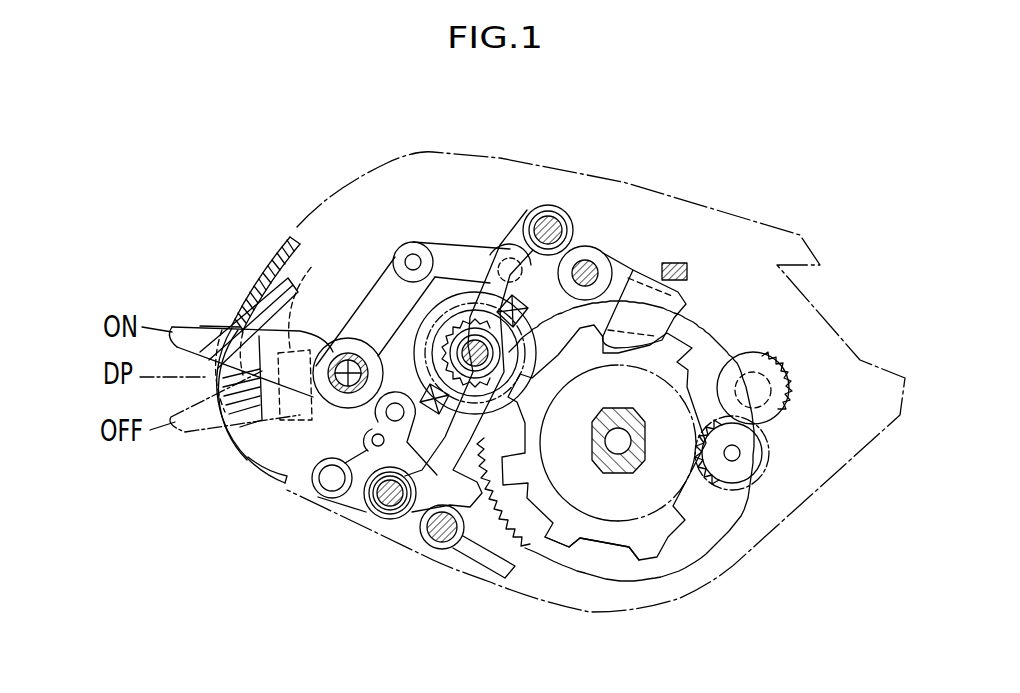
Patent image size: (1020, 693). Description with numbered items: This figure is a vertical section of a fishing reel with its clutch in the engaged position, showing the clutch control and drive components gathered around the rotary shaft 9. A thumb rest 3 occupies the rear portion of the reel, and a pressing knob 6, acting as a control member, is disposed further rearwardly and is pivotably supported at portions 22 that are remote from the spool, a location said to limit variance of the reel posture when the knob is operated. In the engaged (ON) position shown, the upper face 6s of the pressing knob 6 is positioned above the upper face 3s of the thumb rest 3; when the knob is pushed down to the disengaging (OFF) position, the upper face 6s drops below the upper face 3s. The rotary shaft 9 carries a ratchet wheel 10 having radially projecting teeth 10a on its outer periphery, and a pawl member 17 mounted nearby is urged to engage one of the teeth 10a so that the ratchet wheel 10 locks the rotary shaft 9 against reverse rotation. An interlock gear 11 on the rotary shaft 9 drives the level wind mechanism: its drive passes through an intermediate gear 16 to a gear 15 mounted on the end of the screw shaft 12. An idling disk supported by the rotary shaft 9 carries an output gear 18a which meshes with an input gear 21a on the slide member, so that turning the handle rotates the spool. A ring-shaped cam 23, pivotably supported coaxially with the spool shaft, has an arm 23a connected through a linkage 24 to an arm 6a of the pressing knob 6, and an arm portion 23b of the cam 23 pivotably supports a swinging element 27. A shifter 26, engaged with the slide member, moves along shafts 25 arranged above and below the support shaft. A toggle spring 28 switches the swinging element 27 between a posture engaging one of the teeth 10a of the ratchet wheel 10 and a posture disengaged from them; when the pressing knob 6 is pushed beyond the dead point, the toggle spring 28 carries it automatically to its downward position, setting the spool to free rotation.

The thumb rest 3 is at (286, 340).
The upper face of the thumb rest 3s is at (268, 308).
The pressing knob 6 is at (192, 322).
The upper face of the pressing knob 6s is at (218, 318).
The arm of the pressing knob 6a is at (386, 262).
The rotary shaft 9 is at (610, 477).
The ratchet wheel 10 is at (672, 535).
The teeth of the ratchet wheel 10a is at (647, 560).
The interlock gear 11 is at (690, 474).
The screw shaft 12 is at (772, 404).
The gear 15 is at (780, 363).
The intermediate gear 16 is at (770, 460).
The pawl member 17 is at (685, 300).
The output gear 18a is at (527, 548).
The input gear 21a is at (455, 340).
The pivot support portions 22 is at (343, 398).
The ring-shaped cam 23 is at (533, 350).
The arm of the ring-shaped cam 23a is at (481, 275).
The arm portion of the ring-shaped cam 23b is at (282, 352).
The linkage 24 is at (445, 243).
The shafts 25 is at (551, 214).
The shifter 26 is at (540, 421).
The swinging element 27 is at (455, 550).
The toggle spring 28 is at (320, 499).